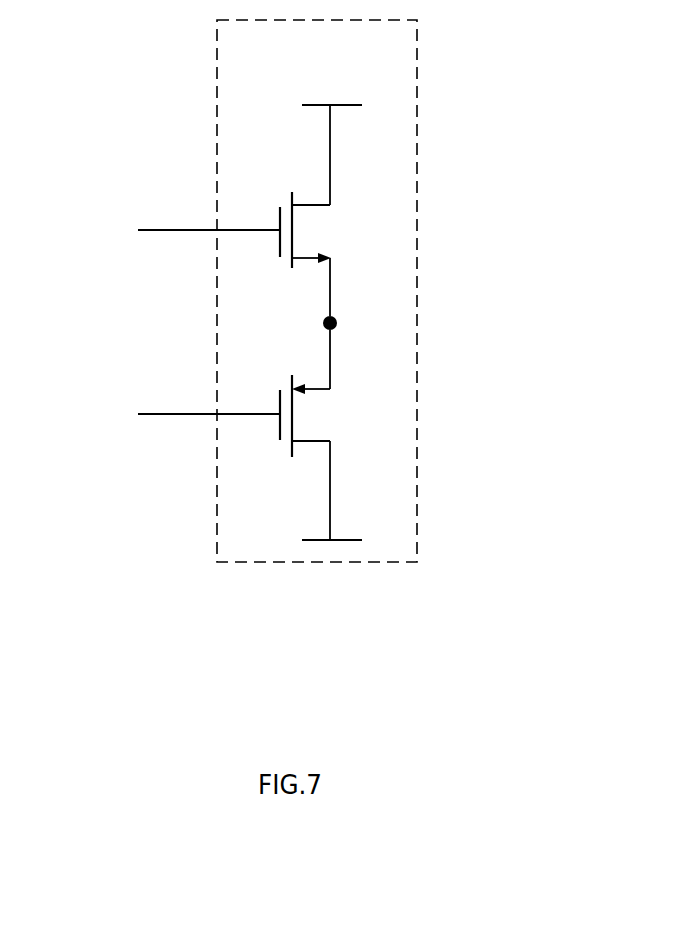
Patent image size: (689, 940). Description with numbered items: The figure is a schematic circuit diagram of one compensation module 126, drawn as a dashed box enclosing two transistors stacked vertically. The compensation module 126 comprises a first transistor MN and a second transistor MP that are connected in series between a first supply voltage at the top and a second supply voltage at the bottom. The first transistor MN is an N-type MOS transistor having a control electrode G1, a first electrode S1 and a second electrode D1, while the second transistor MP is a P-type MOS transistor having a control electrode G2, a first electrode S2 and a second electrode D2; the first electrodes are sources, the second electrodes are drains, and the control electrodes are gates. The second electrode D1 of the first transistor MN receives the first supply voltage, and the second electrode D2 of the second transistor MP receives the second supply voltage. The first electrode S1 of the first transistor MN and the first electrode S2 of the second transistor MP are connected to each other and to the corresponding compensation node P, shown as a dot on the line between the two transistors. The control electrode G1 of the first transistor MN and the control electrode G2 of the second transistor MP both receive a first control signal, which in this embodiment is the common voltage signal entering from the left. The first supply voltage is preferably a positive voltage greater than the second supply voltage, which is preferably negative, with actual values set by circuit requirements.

The compensation module 126 is at (293, 291).
The first transistor MN is at (326, 230).
The second transistor MP is at (325, 416).
The compensation node P is at (344, 326).
The second electrode of the first transistor D1 is at (299, 154).
The control electrode of the first transistor G1 is at (209, 213).
The first electrode of the first transistor S1 is at (346, 287).
The first electrode of the second transistor S2 is at (346, 359).
The control electrode of the second transistor G2 is at (209, 398).
The second electrode of the second transistor D2 is at (358, 490).